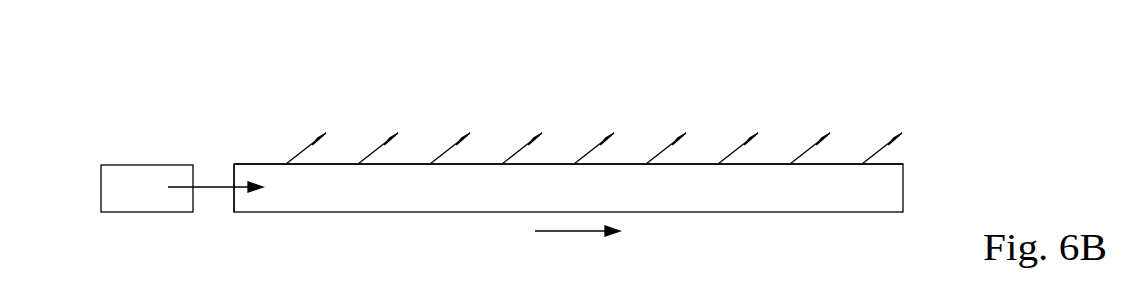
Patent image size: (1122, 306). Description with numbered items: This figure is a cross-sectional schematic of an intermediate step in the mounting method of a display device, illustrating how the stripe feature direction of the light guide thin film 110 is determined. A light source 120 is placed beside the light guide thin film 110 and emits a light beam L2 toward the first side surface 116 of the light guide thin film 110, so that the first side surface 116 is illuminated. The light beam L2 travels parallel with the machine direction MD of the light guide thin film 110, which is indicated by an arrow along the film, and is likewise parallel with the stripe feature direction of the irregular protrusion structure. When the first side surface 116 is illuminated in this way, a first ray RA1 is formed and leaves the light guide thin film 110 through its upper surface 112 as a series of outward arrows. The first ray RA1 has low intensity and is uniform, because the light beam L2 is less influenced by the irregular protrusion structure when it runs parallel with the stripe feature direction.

The light guide thin film 110 is at (308, 212).
The light exit surface of light guide plate 112 is at (395, 164).
The first side surface 116 is at (235, 174).
The light source 120 is at (146, 176).
The light beam L2 is at (213, 187).
The first ray RA1 is at (792, 158).
The machine direction MD is at (577, 247).